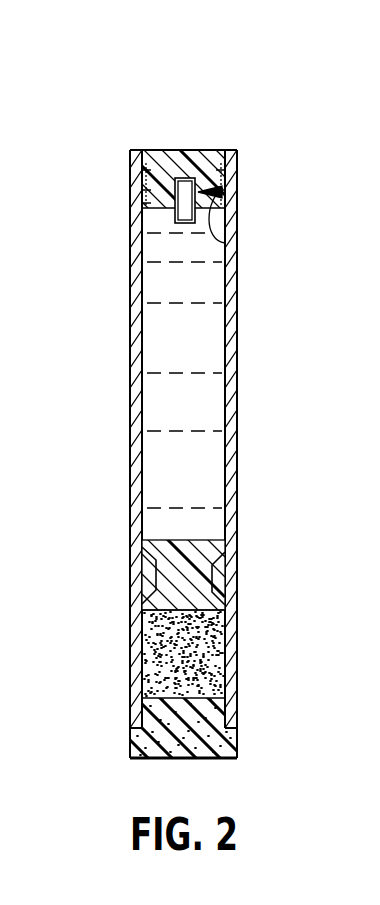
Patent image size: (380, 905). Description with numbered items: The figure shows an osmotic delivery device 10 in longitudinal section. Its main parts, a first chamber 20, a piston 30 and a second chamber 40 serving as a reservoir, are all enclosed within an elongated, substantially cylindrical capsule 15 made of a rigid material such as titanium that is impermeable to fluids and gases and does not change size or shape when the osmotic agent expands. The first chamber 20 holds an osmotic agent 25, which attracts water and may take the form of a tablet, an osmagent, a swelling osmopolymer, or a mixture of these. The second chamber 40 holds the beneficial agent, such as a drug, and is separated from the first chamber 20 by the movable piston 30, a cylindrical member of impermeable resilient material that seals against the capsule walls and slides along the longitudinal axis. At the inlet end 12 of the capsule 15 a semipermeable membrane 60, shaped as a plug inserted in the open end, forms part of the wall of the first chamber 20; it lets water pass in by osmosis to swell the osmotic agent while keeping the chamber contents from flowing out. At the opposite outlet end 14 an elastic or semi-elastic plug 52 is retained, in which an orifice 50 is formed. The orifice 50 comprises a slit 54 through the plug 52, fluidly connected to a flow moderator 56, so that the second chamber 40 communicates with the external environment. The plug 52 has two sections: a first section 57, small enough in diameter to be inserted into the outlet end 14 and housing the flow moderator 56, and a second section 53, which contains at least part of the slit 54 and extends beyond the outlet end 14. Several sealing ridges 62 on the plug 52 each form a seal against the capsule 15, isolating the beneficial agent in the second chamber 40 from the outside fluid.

The osmotic delivery device 10 is at (162, 90).
The inlet end 12 is at (130, 743).
The outlet end 14 is at (130, 158).
The elongated capsule 15 is at (237, 447).
The first chamber 20 is at (232, 666).
The osmotic agent 25 is at (160, 638).
The piston 30 is at (200, 580).
The second chamber 40 is at (232, 352).
The orifice 50 is at (187, 152).
The plug 52 is at (205, 160).
The second section 53 is at (238, 153).
The slit 54 is at (183, 172).
The flow moderator 56 is at (222, 192).
The first section 57 is at (140, 190).
The membrane 60 is at (208, 712).
The sealing ridges 62 is at (225, 238).